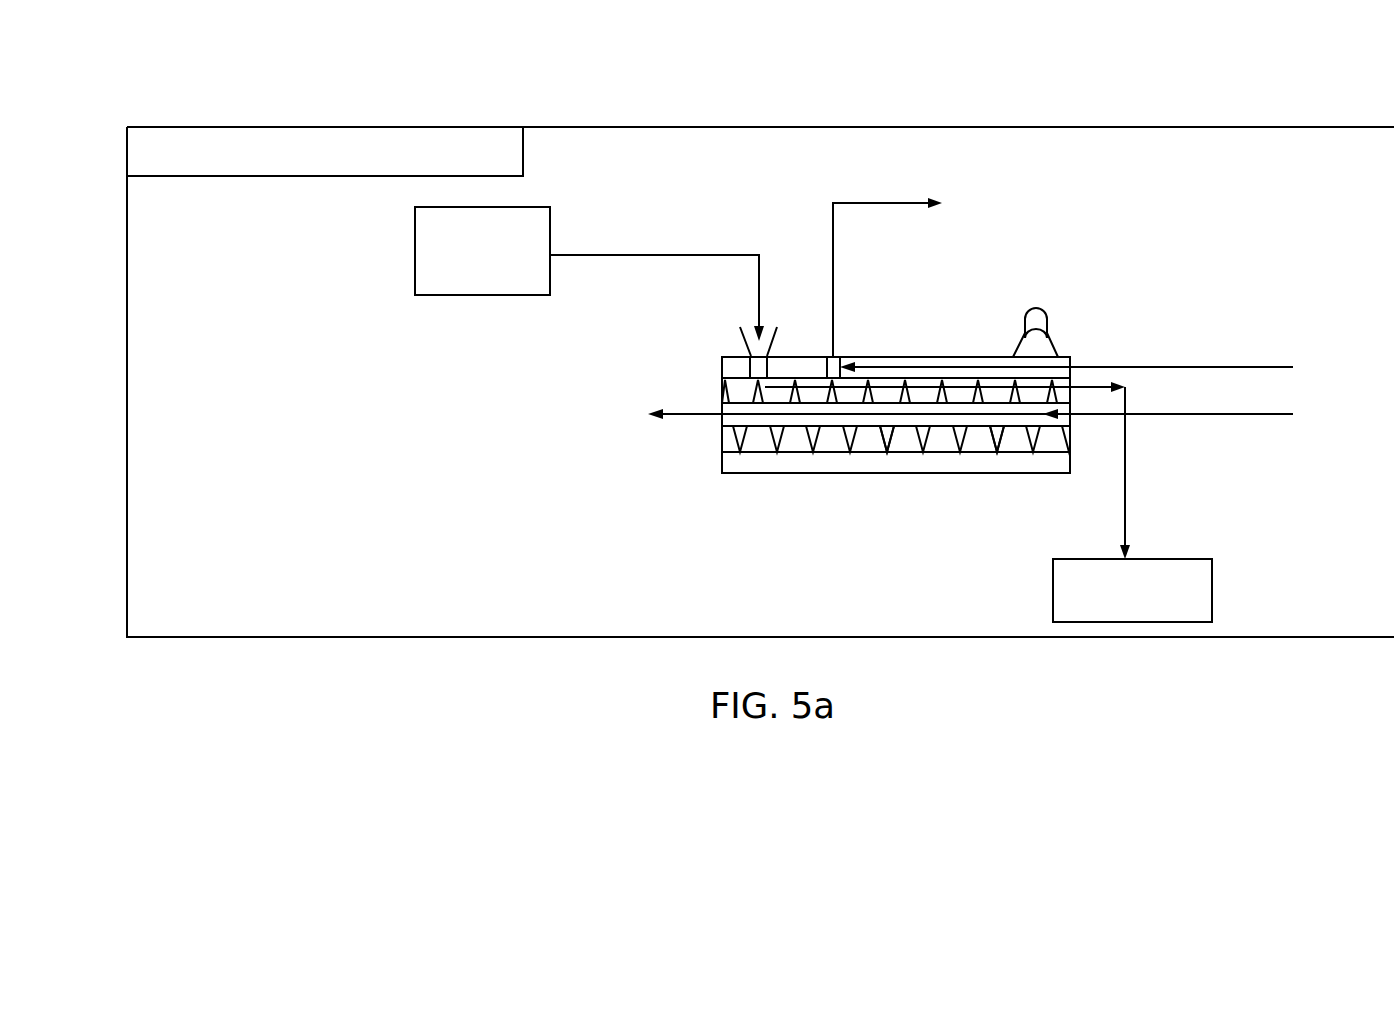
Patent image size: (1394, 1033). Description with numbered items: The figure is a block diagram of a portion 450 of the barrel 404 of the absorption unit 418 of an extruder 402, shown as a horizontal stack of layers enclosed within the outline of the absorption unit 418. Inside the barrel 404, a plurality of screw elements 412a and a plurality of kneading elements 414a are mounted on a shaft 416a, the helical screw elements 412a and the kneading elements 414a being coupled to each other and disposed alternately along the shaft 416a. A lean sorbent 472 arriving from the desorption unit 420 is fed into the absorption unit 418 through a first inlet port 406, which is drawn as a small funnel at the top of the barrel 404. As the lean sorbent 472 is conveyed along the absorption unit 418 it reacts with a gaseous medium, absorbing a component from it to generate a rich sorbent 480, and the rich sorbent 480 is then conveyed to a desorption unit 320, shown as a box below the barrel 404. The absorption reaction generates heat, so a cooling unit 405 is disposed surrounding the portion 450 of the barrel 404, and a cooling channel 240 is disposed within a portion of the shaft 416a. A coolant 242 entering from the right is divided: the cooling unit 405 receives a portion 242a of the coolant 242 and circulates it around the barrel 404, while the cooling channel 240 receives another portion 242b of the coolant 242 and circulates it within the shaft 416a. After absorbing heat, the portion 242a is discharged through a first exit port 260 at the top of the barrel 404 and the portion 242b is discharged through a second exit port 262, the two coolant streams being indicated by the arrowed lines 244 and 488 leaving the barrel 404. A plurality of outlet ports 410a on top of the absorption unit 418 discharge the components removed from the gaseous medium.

The portion of the barrel 450 is at (241, 84).
The absorption unit 418 is at (694, 113).
The desorption unit 420 is at (482, 295).
The lean sorbent 472 is at (620, 253).
The first inlet port 406 is at (773, 347).
The extruder 402 is at (714, 394).
The first exit port 260 is at (840, 353).
The outlet flow 244 is at (902, 198).
The portion of coolant 242a is at (1230, 366).
The coolant 242 is at (1322, 384).
The another portion of coolant 242b is at (1248, 417).
The rich sorbent 480 is at (1125, 472).
The desorption unit 320 is at (1212, 587).
The outlet ports 410a is at (1033, 307).
The second exit port 262 is at (720, 418).
The shaft 416a is at (757, 427).
The cooling channel 240 is at (797, 418).
The barrel 404 is at (755, 452).
The cooling unit 405 is at (842, 465).
The screw elements 412a is at (897, 443).
The kneading elements 414a is at (980, 443).
The bottom plate 488 is at (1053, 477).